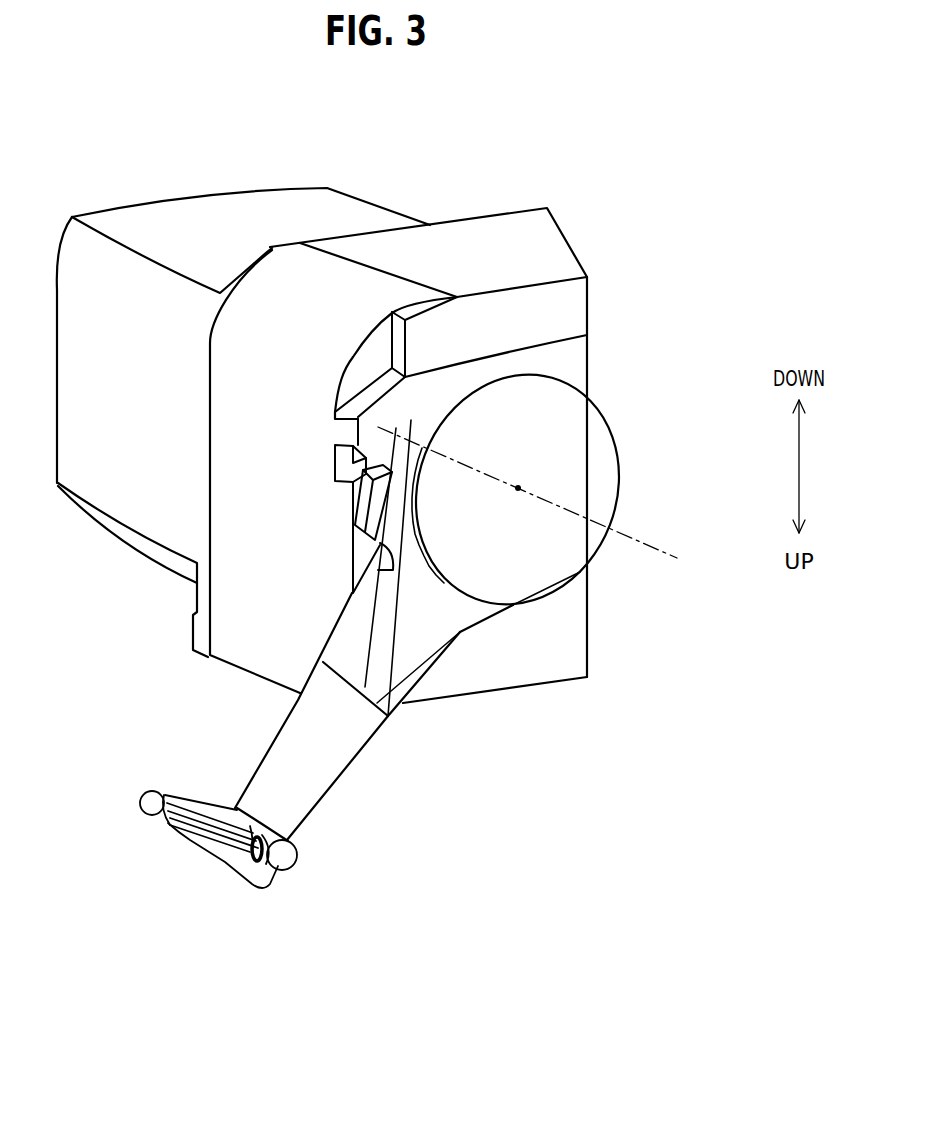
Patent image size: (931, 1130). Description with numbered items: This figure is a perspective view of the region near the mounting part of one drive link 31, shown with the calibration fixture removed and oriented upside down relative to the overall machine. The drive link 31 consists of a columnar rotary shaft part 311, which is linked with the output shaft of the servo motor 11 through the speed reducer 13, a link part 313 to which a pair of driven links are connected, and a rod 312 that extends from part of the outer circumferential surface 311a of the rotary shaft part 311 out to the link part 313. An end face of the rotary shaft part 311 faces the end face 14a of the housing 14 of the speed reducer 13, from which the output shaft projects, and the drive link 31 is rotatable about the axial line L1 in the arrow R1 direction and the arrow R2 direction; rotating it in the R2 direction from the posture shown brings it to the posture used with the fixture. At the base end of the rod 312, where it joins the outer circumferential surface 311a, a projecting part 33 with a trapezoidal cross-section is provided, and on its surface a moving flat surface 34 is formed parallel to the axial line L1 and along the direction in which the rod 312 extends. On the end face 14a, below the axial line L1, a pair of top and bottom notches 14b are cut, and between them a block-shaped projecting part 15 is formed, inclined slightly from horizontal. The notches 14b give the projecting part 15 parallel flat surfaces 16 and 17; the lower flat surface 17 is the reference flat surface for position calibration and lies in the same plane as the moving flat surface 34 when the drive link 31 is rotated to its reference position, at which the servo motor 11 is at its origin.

The servo motor 11 is at (360, 189).
The speed reducer 13 is at (577, 224).
The housing 14 is at (245, 623).
The end face 14a is at (547, 657).
The notches 14b is at (360, 360).
The projecting part 15 is at (343, 432).
The flat surface 16 is at (335, 458).
The reference flat surface 17 is at (383, 386).
The drive link 31 is at (382, 745).
The rotary shaft part 311 is at (600, 410).
The outer circumferential surface 311a is at (487, 367).
The rod 312 is at (330, 793).
The link part 313 is at (207, 855).
The projecting part 33 is at (380, 510).
The moving flat surface 34 is at (363, 503).
The axial line L1 is at (549, 504).
The arrow R1 direction R1 is at (643, 560).
The arrow R2 direction R2 is at (660, 533).